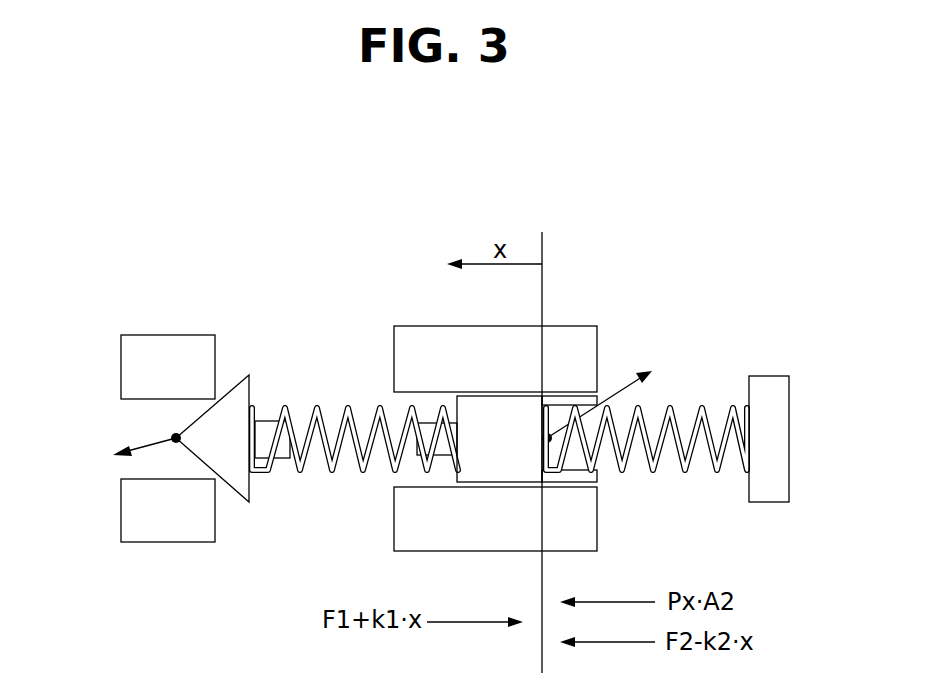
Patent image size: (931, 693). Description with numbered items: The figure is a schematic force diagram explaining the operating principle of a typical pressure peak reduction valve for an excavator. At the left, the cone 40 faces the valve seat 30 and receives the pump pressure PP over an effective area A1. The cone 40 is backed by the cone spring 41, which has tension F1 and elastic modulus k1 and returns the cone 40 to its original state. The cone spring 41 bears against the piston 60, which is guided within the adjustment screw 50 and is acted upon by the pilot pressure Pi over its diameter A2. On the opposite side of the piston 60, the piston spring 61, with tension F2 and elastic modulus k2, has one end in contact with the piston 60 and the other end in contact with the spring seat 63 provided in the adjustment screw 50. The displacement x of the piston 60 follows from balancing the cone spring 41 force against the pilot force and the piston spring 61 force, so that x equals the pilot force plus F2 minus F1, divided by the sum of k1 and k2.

The valve seat 30 is at (155, 335).
The cone 40 is at (237, 393).
The cone spring 41 is at (310, 407).
The adjustment screw 50 is at (405, 328).
The piston 60 is at (498, 400).
The piston spring 61 is at (701, 408).
The spring seat 63 is at (769, 377).